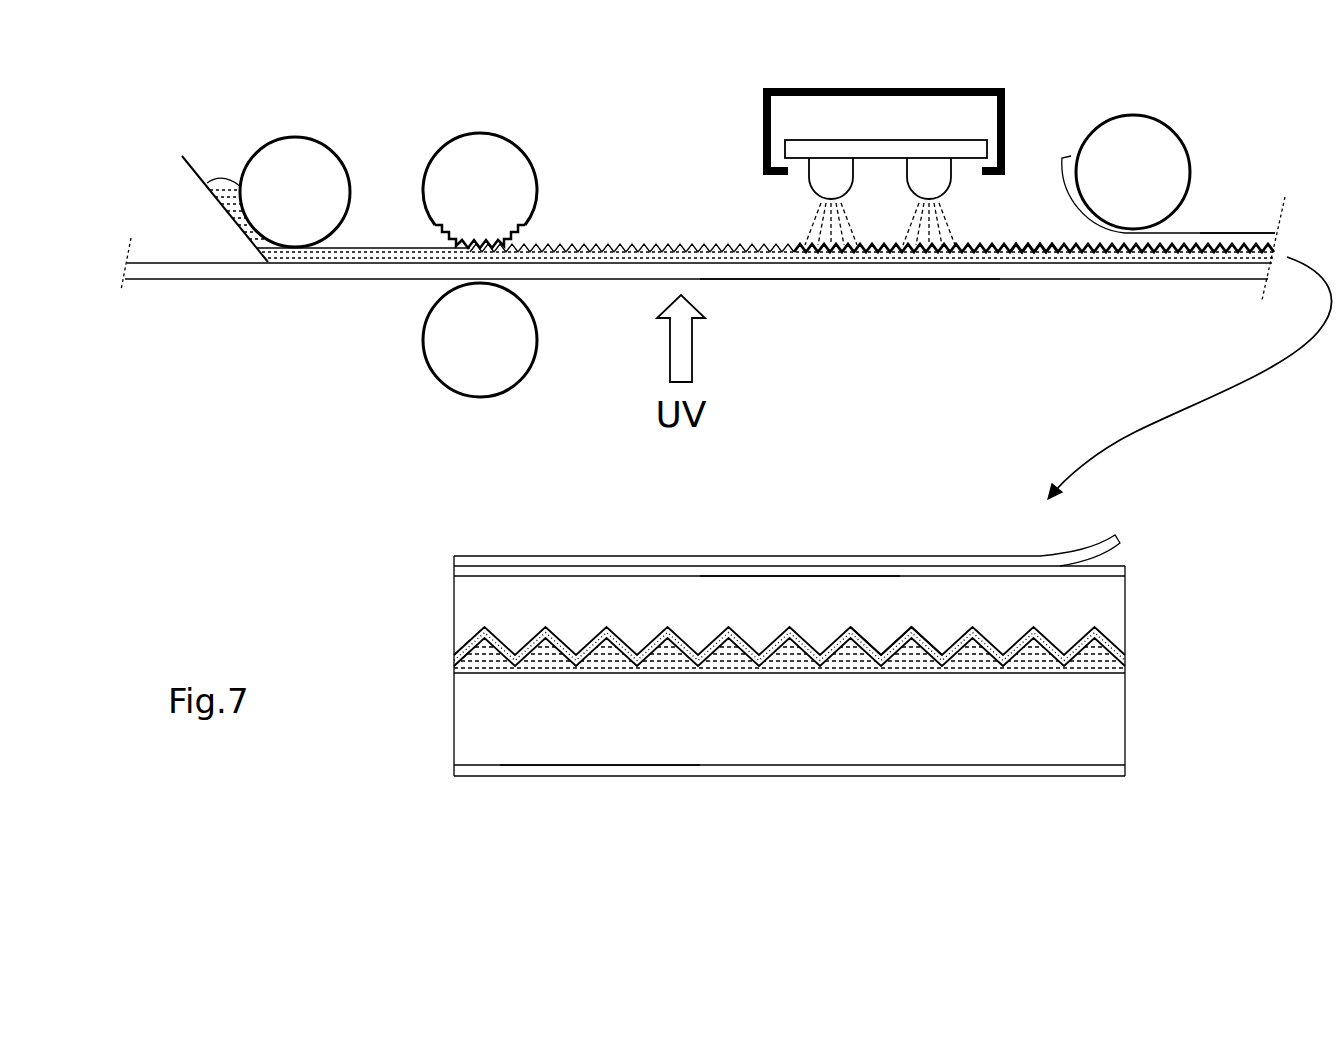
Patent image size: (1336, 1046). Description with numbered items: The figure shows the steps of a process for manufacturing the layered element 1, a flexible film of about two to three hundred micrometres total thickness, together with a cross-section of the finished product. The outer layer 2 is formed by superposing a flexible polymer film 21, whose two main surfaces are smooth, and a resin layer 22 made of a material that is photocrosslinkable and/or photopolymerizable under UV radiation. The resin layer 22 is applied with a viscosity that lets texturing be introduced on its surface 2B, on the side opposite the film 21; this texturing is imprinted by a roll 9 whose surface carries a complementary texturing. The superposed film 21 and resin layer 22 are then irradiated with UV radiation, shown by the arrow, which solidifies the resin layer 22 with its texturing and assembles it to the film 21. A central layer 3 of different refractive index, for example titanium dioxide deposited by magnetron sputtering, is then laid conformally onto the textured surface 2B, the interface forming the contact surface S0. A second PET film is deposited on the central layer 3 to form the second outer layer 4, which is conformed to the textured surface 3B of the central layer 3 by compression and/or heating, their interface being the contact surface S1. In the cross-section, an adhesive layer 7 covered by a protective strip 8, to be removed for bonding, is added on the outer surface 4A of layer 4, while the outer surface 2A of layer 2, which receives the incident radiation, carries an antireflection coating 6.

The layered element 1 is at (340, 623).
The outer layer 2 is at (699, 506).
The flexible film 21 is at (552, 272).
The resin layer 22 is at (642, 258).
The outer surface 2A is at (742, 290).
The textured surface 2B is at (731, 242).
The central layer 3 is at (962, 250).
The textured surface of the central layer 3B is at (1018, 240).
The second outer layer 4 is at (1200, 240).
The outer surface 4A is at (1242, 224).
The antireflection coating 6 is at (933, 772).
The layer of adhesive 7 is at (497, 570).
The protective strip 8 is at (595, 560).
The roll 9 is at (493, 157).
The contact surface S1 is at (446, 652).
The contact surface S0 is at (446, 667).